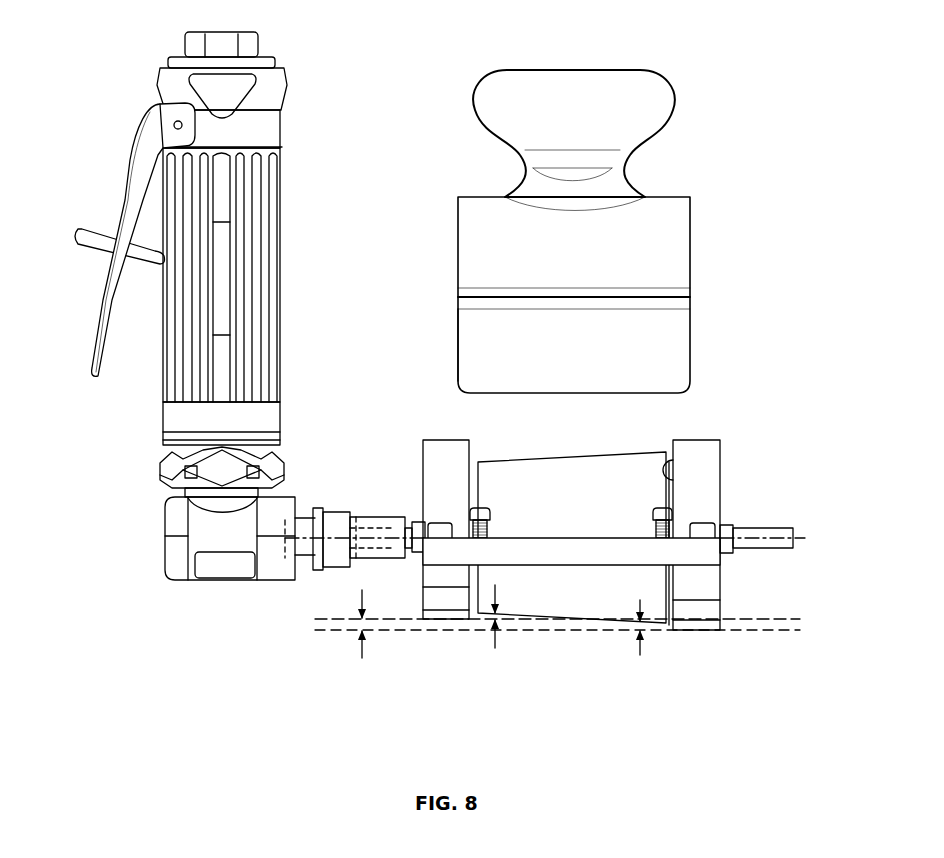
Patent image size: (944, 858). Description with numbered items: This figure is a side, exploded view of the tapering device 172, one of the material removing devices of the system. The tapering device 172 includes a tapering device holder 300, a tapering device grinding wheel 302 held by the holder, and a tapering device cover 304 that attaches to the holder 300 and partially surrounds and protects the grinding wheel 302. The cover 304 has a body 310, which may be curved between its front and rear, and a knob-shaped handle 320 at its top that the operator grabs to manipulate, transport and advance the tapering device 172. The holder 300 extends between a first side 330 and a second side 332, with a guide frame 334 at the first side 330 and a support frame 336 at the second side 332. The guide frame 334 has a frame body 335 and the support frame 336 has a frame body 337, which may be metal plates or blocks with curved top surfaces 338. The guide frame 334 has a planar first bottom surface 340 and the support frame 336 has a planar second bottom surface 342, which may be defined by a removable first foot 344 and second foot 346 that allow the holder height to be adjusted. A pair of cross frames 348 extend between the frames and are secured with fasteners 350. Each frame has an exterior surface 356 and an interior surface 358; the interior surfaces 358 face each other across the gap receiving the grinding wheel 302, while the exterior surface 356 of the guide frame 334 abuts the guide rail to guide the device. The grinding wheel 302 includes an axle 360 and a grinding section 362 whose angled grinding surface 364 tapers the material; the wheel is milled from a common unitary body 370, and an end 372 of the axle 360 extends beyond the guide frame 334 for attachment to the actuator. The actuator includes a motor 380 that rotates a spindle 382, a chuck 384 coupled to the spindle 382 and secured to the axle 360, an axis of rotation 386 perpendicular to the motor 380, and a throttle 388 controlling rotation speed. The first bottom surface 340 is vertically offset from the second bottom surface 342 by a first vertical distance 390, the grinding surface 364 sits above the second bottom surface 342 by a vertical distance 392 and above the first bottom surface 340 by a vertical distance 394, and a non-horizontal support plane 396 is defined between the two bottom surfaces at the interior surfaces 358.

The tapering device 172 is at (443, 55).
The tapering device holder 300 is at (742, 400).
The tapering device grinding wheel 302 is at (662, 458).
The tapering device cover 304 is at (664, 350).
The body 310 is at (663, 252).
The handle 320 is at (575, 80).
The first side 330 is at (397, 417).
The second side 332 is at (750, 423).
The guide frame 334 is at (443, 447).
The frame body 335 is at (437, 463).
The support frame 336 is at (698, 438).
The frame body 337 is at (710, 584).
The curved top surfaces 338 is at (456, 445).
The first bottom surface 340 is at (435, 621).
The second bottom surface 342 is at (690, 632).
The first foot 344 is at (423, 602).
The second foot 346 is at (712, 610).
The cross frames 348 is at (710, 556).
The fasteners 350 is at (700, 522).
The exterior surface 356 is at (680, 478).
The interior surface 358 is at (722, 465).
The axle 360 is at (780, 526).
The grinding section 362 is at (542, 470).
The grinding surface 364 is at (558, 622).
The unitary body 370 is at (592, 600).
The end of the axle 372 is at (386, 520).
The motor 380 is at (265, 223).
The spindle 382 is at (175, 560).
The chuck 384 is at (323, 558).
The axis of rotation 386 is at (370, 518).
The throttle 388 is at (110, 270).
The first vertical distance 390 is at (362, 648).
The vertical distance 392 is at (641, 655).
The vertical distance 394 is at (495, 648).
The support plane 396 is at (520, 622).